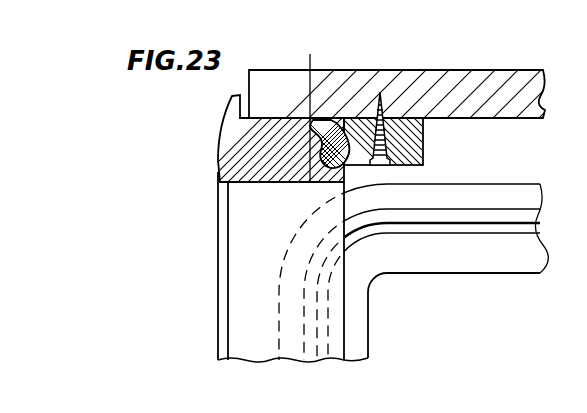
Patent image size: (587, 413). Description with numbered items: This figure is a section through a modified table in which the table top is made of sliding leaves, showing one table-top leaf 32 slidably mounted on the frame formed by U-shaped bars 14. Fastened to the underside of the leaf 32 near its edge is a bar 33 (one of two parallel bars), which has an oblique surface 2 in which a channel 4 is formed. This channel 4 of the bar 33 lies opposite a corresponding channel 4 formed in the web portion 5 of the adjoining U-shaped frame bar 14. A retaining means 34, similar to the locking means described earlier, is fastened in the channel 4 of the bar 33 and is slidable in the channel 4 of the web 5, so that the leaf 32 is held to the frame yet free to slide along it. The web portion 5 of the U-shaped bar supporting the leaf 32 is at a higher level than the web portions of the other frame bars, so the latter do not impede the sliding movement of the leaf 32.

The oblique surface 2 is at (309, 106).
The channel 4 is at (310, 183).
The web portion 5 is at (226, 178).
The bar 14 is at (214, 250).
The table-top leaf 32 is at (428, 80).
The bar 33 is at (425, 142).
The retaining means 34 is at (330, 125).